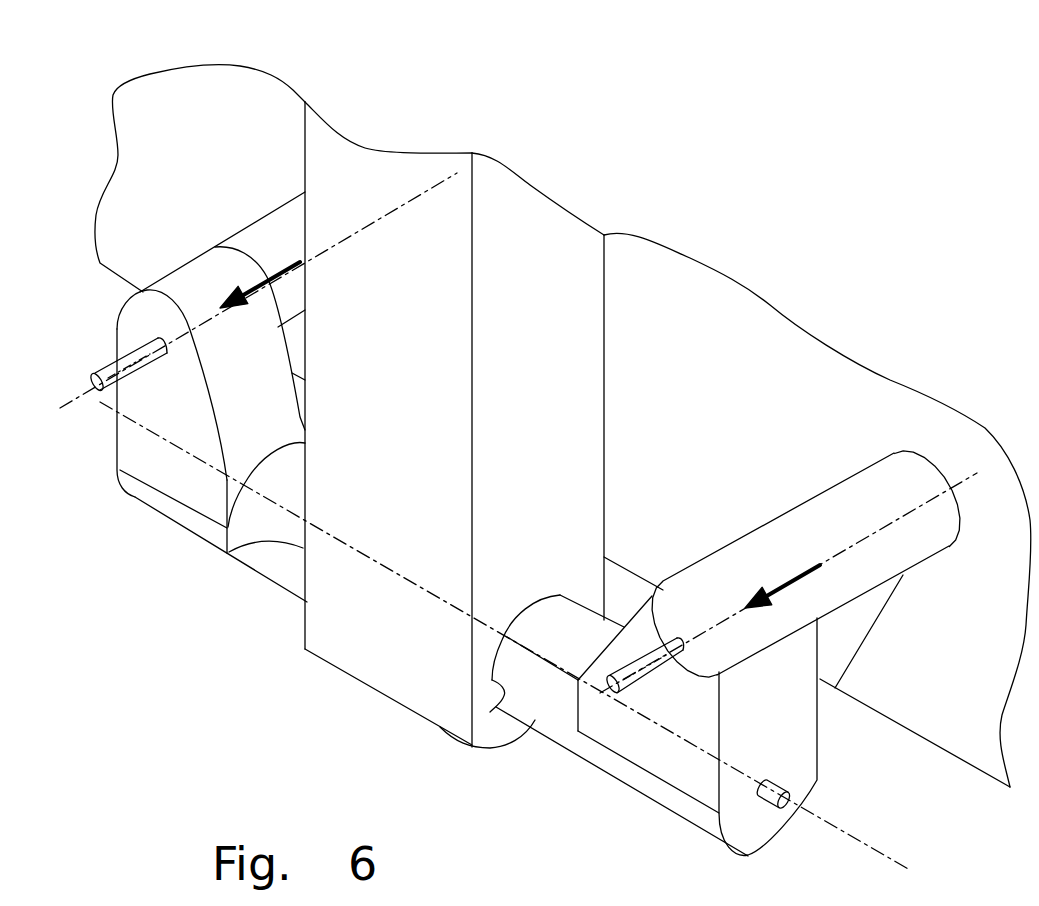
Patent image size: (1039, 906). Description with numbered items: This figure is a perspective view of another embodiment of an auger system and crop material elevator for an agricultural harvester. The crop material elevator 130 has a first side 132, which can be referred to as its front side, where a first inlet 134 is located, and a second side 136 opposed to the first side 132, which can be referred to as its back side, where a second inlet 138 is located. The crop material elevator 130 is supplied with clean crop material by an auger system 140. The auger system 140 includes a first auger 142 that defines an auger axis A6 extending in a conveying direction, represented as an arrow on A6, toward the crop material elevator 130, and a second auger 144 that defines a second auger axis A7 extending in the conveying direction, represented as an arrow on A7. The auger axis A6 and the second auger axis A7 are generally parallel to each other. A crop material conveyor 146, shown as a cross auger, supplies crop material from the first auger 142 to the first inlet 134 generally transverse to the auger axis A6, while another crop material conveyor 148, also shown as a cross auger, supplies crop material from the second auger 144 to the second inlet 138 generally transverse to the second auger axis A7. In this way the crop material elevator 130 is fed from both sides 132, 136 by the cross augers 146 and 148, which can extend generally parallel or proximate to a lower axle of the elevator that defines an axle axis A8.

The crop material elevator 130 is at (300, 602).
The first side 132 is at (593, 416).
The first inlet 134 is at (490, 713).
The second side 136 is at (305, 158).
The second inlet 138 is at (230, 550).
The auger system 140 is at (713, 413).
The first auger 142 is at (905, 548).
The second auger 144 is at (238, 243).
The crop material conveyor 146 is at (632, 778).
The crop material conveyor 148 is at (148, 500).
The auger axis A6 is at (788, 583).
The second auger axis A7 is at (258, 290).
The axle axis A8 is at (505, 636).